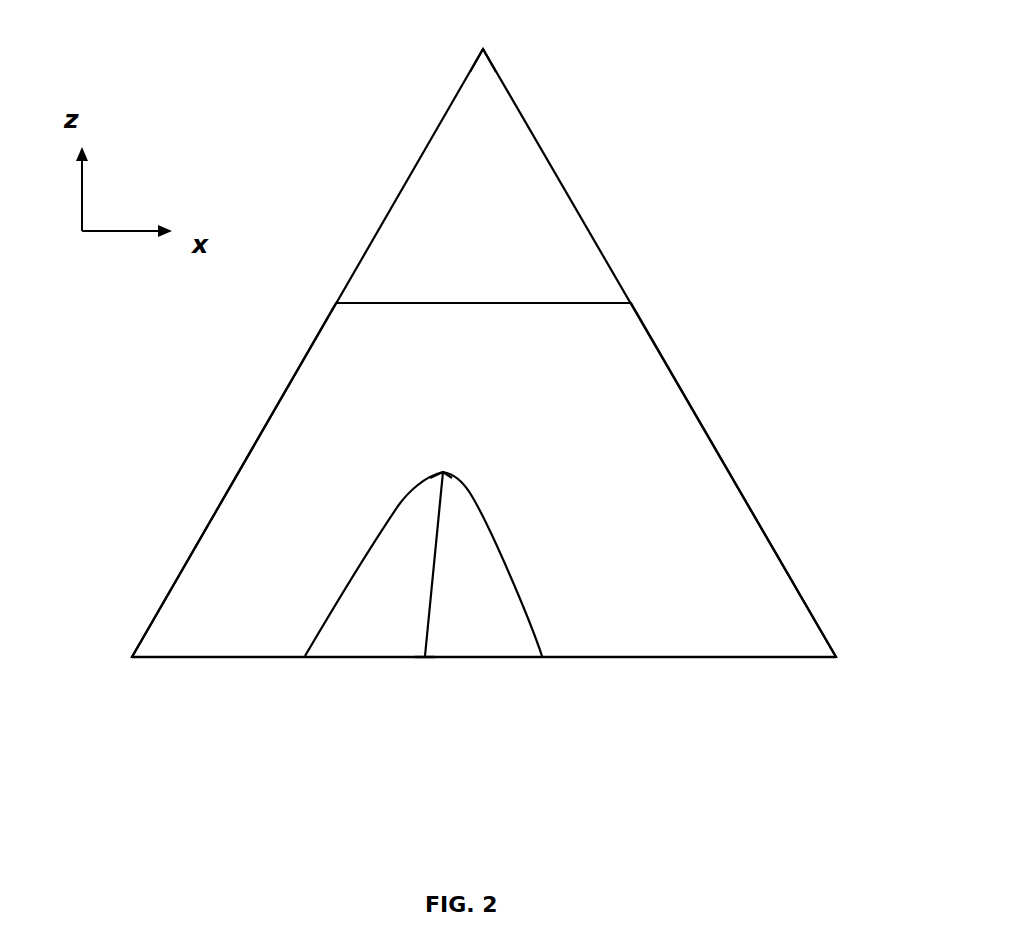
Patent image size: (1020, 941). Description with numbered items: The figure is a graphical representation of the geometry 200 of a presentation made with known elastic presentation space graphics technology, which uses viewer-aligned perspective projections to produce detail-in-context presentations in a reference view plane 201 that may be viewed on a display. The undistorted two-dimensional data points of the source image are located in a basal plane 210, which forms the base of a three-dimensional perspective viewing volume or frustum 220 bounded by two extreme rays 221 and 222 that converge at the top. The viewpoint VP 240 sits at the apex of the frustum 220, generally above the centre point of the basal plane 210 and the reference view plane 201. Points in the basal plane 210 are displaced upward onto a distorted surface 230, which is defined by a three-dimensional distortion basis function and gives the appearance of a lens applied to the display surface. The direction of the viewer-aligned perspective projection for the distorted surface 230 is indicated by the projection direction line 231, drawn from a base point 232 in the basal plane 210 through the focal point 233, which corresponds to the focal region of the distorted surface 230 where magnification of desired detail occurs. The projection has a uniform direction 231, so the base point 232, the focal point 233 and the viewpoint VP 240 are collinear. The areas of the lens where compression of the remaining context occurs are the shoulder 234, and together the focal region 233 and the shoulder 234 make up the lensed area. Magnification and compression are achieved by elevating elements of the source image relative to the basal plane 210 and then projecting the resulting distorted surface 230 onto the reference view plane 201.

The geometry 200 is at (758, 70).
The reference view plane 201 is at (455, 303).
The basal plane 210 is at (662, 657).
The frustum 220 is at (732, 555).
The extreme ray 221 is at (713, 439).
The extreme ray 222 is at (250, 452).
The distorted surface 230 is at (510, 573).
The line FPo-FP 231 is at (440, 522).
The point FPo 232 is at (425, 656).
The point FP 233 is at (443, 472).
The shoulder 234 is at (330, 610).
The viewpoint VP 240 is at (492, 48).